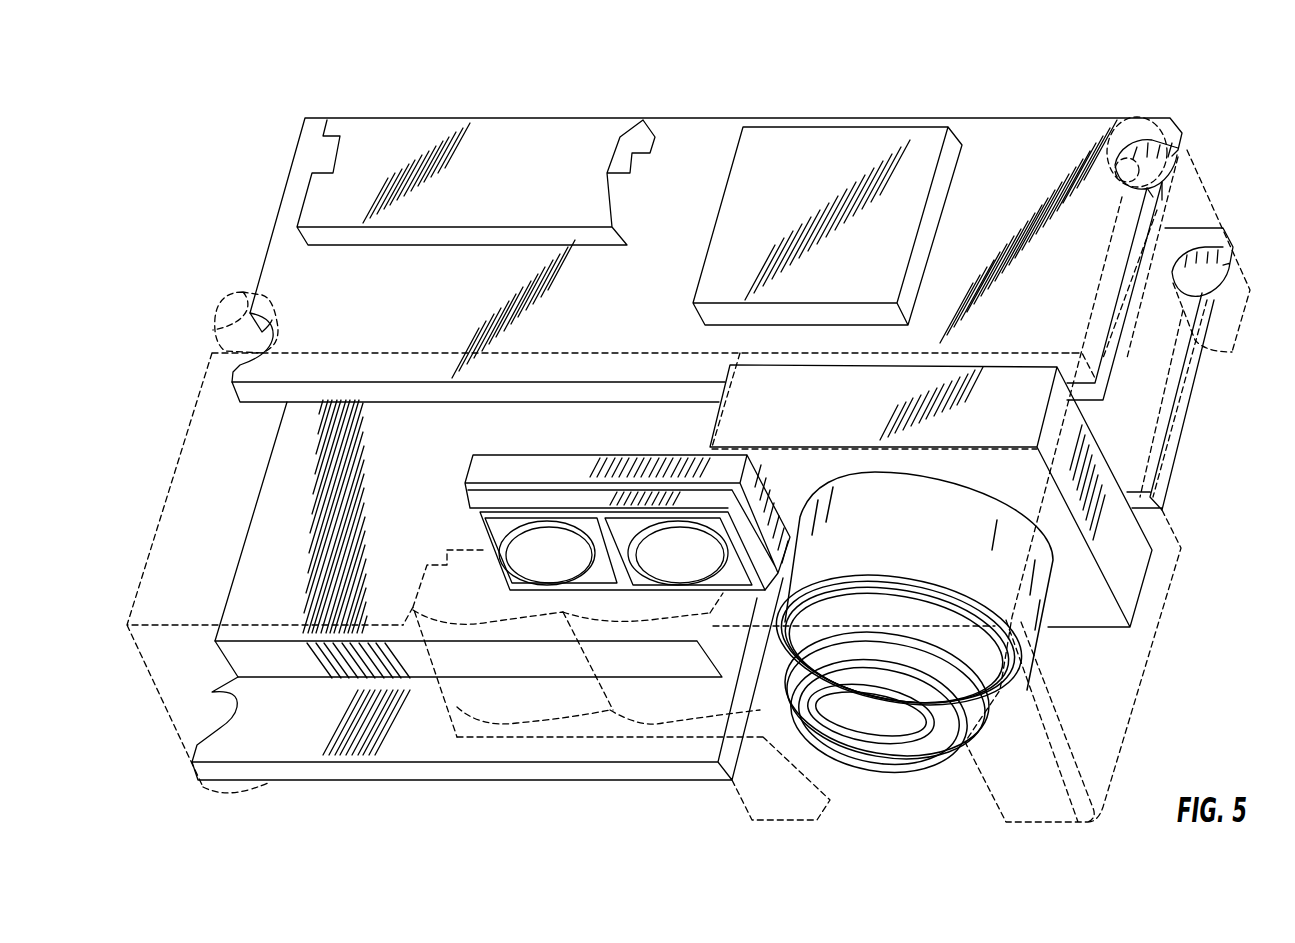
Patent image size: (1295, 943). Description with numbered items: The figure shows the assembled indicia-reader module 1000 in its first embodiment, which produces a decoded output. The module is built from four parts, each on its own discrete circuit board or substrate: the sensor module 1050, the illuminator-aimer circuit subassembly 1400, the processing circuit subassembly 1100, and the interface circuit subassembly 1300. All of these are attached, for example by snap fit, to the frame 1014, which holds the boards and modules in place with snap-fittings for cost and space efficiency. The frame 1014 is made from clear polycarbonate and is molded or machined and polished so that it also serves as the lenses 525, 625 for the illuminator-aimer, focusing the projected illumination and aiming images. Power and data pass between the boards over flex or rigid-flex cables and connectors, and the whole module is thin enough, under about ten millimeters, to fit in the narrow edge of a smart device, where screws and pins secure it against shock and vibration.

The indicia-reader module 1000 is at (228, 119).
The interface circuit subassembly 1300 is at (1003, 163).
The frame 1014 is at (1147, 160).
The processing circuit subassembly 1100 is at (1145, 412).
The illuminator-aimer circuit subassembly 1400 is at (508, 465).
The lens 525 is at (530, 668).
The lens 625 is at (668, 668).
The sensor module 1050 is at (884, 760).